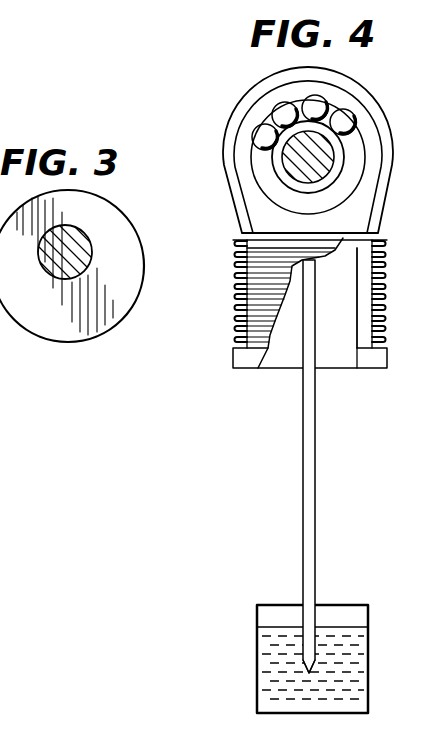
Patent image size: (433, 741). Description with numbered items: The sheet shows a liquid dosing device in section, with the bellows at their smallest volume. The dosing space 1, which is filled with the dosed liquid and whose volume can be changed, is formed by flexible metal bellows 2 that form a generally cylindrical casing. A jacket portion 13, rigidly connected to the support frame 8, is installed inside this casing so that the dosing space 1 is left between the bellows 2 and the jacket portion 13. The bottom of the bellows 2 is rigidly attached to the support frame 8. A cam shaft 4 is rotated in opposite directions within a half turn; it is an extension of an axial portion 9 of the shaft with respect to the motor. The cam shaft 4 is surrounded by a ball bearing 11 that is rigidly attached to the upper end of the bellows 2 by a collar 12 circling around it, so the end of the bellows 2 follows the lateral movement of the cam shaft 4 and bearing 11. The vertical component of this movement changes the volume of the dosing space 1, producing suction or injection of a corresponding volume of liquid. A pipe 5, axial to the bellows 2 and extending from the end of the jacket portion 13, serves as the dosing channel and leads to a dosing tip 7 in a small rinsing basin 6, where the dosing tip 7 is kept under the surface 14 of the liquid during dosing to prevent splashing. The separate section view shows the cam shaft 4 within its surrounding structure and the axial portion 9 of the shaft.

In FIG. 4, the dosing space 1 is at (350, 302).
In FIG. 3, the flexible metal bellows 2 is at (84, 232).
In FIG. 4, the flexible metal bellows 2 is at (234, 285).
In FIG. 4, the cam shaft 4 is at (325, 163).
In FIG. 4, the pipe 5 is at (310, 494).
In FIG. 4, the small rinsing basin 6 is at (258, 617).
In FIG. 4, the dosing tip 7 is at (313, 674).
In FIG. 4, the support frame 8 is at (372, 363).
In FIG. 3, the axial portion of the shaft 9 is at (60, 330).
In FIG. 4, the ball bearing 11 is at (347, 113).
In FIG. 4, the collar 12 is at (230, 125).
In FIG. 4, the jacket portion 13 is at (340, 360).
In FIG. 4, the surface of the liquid 14 is at (282, 625).